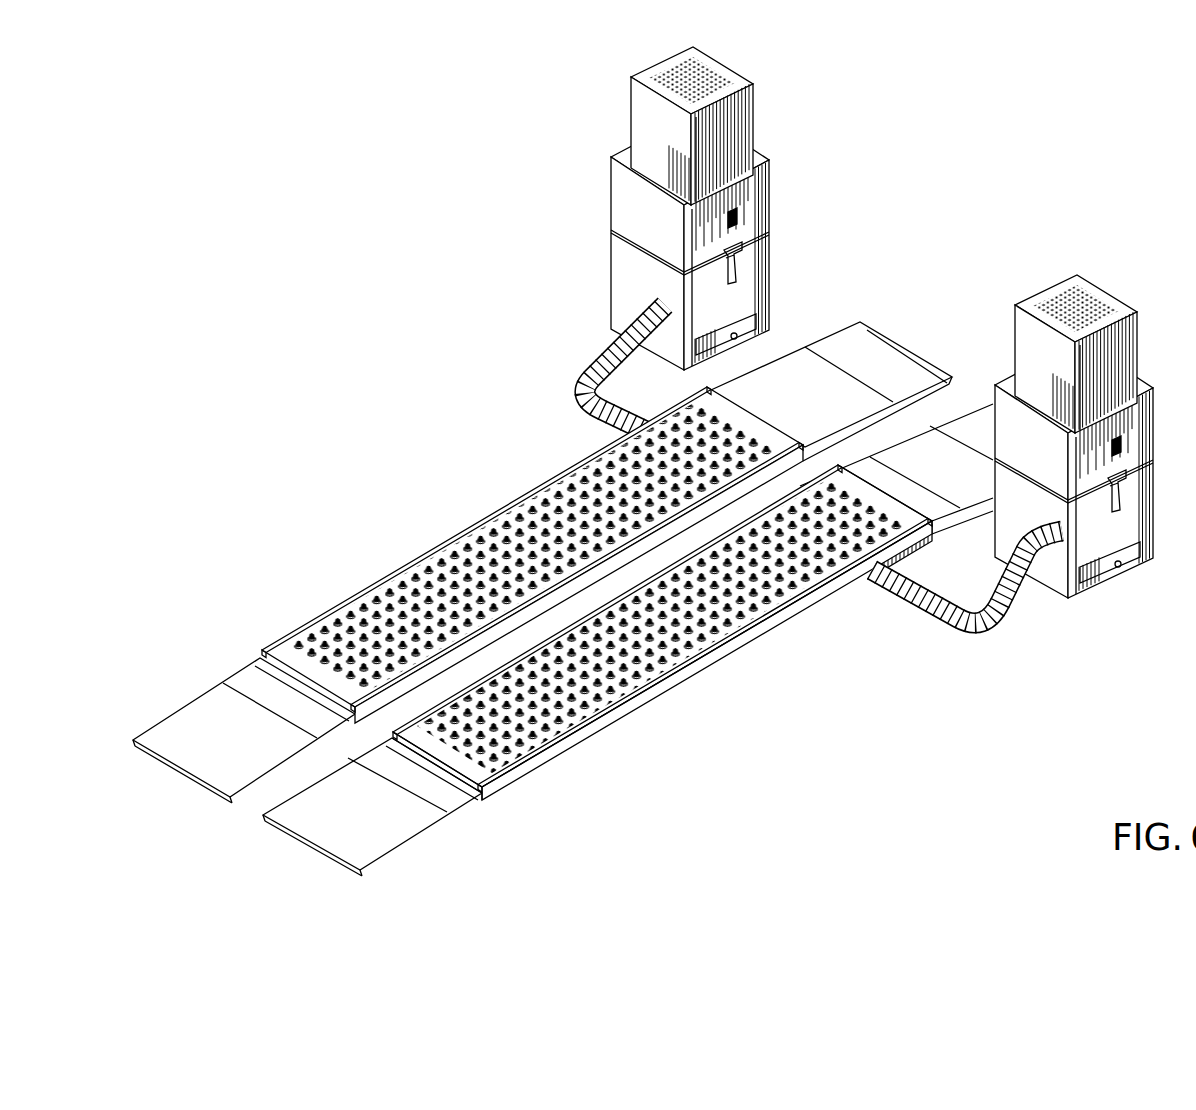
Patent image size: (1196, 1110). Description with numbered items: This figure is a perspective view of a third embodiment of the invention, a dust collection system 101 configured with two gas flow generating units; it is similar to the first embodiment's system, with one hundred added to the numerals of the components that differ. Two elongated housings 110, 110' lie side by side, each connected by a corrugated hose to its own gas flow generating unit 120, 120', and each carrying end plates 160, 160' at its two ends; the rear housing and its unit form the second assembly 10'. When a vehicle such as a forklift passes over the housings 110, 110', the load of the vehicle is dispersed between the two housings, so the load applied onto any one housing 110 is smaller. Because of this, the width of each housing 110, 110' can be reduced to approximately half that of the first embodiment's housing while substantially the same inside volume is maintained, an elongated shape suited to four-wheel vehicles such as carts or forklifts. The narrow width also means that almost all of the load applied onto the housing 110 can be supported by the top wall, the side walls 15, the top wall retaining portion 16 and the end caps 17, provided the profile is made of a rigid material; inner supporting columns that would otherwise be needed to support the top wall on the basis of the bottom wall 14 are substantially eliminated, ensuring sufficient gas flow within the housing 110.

The ramp assembly (second) 10' is at (542, 418).
The dust collection system 101 is at (708, 537).
The housing 110 is at (662, 626).
The housing 110' is at (532, 555).
The suction unit 120 is at (1074, 398).
The suction unit (second) 120' is at (717, 201).
The end plate 160 is at (633, 609).
The end plate (second) 160' is at (542, 540).
The bottom wall 14 is at (522, 780).
The side walls 15 is at (543, 758).
The top wall retaining portion 16 is at (593, 725).
The end caps 17 is at (472, 810).